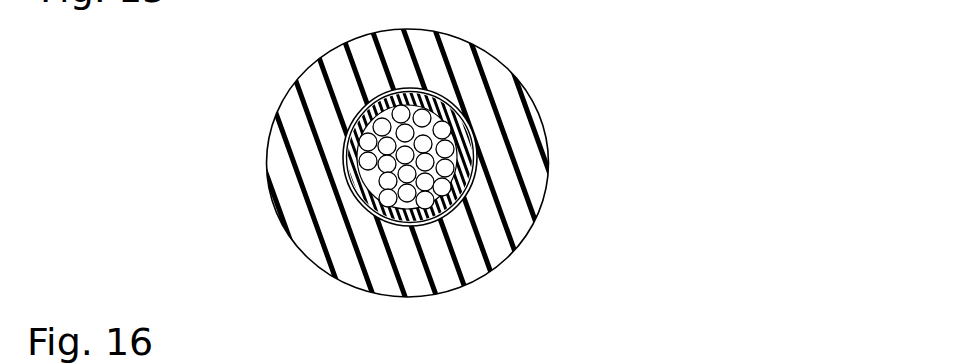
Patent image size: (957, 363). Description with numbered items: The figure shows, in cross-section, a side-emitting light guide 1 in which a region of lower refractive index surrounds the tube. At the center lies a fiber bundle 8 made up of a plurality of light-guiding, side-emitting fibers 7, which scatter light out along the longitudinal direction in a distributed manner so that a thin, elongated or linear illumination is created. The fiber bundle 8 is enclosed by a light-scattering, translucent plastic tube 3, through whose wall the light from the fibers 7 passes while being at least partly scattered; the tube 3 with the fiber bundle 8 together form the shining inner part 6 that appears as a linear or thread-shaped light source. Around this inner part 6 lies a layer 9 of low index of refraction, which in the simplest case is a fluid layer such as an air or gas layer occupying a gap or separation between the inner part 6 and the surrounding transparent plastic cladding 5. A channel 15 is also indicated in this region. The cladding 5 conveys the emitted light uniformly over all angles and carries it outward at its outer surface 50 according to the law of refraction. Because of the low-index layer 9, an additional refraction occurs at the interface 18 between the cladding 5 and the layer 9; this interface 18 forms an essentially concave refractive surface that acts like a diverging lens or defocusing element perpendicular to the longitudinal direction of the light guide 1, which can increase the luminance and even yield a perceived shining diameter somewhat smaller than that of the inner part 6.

The light guide 1 is at (183, 138).
The tube 3 is at (467, 104).
The cladding 5 is at (517, 217).
The inner part 6 is at (477, 162).
The fiber 7 is at (370, 182).
The fiber bundle 8 is at (365, 190).
The layer 9 is at (434, 115).
The channel 15 is at (417, 90).
The interface 18 is at (393, 227).
The outer surface 50 is at (473, 280).